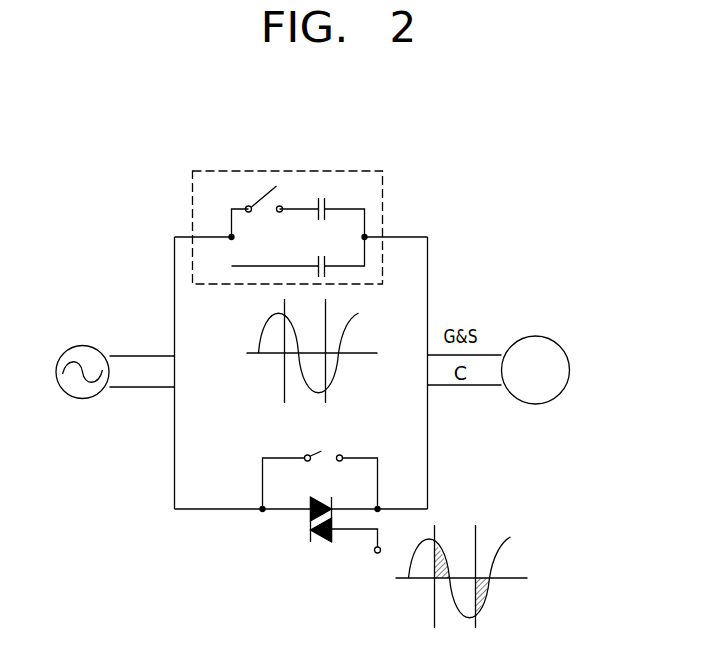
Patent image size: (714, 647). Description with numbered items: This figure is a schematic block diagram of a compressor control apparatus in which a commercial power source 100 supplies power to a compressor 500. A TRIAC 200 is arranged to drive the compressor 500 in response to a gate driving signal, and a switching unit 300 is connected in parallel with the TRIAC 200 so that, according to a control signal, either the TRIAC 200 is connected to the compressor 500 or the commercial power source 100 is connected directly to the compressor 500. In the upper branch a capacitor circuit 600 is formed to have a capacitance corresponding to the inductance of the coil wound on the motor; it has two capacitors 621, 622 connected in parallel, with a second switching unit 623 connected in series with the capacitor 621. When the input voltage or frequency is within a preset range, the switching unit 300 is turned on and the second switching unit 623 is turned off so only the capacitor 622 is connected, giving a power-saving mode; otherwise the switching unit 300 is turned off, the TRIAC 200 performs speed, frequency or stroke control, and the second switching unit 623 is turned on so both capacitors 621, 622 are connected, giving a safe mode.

The commercial power source 100 is at (82, 345).
The TRIAC 200 is at (310, 529).
The switching unit 300 is at (318, 452).
The compressor 500 is at (535, 336).
The capacitor circuit 600 is at (288, 201).
The capacitor 621 is at (323, 199).
The capacitor 622 is at (323, 255).
The second switching unit 623 is at (254, 195).